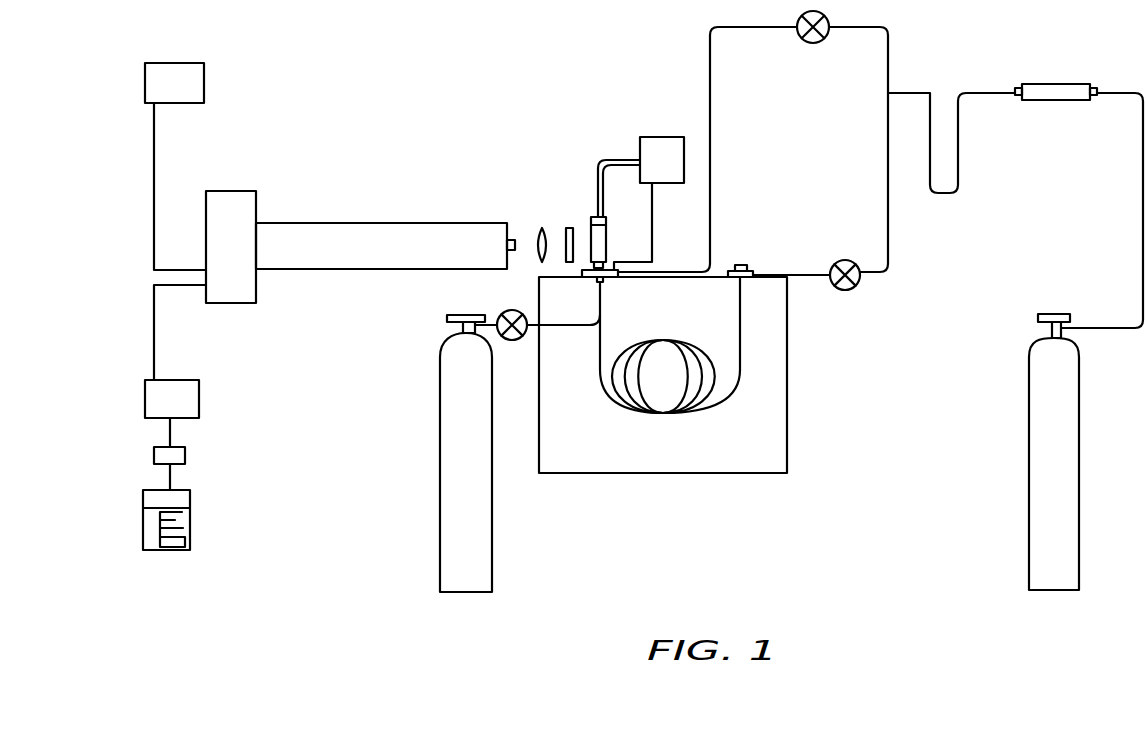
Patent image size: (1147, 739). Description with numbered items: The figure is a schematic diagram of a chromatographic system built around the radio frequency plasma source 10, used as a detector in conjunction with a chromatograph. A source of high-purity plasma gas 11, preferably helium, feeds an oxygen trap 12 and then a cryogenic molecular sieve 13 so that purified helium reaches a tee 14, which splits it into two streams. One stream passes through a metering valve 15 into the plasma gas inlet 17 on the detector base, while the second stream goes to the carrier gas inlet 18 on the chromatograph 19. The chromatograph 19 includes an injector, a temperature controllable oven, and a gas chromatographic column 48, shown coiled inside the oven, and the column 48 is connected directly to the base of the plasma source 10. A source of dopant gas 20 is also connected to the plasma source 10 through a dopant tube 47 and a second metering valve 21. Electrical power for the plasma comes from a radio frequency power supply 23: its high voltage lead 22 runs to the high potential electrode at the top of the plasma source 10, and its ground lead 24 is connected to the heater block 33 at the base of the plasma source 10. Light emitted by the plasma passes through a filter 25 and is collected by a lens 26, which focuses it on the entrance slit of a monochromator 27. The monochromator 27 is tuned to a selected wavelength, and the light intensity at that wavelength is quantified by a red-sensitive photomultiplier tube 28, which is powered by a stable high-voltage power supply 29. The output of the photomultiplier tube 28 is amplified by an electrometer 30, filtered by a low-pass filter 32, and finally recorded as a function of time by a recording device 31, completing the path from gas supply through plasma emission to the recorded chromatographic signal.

The radio frequency plasma source 10 is at (603, 242).
The source of high-purity plasma gas 11 is at (1066, 448).
The oxygen trap 12 is at (1057, 99).
The cryogenic molecular sieve 13 is at (960, 170).
The tee 14 is at (887, 97).
The metering valve 15 is at (807, 43).
The plasma gas inlet 17 is at (640, 272).
The carrier gas inlet 18 is at (752, 270).
The chromatograph 19 is at (778, 383).
The source of dopant gas 20 is at (473, 563).
The metering valve 21 is at (512, 340).
The high voltage lead 22 is at (594, 178).
The radio frequency power supply 23 is at (663, 148).
The ground lead 24 is at (652, 208).
The filter 25 is at (569, 228).
The lens 26 is at (538, 232).
The monochromator 27 is at (373, 243).
The red-sensitive photomultiplier tube 28 is at (240, 207).
The stable high-voltage power supply 29 is at (193, 88).
The electrometer 30 is at (188, 390).
The recording device 31 is at (185, 522).
The low-pass filter 32 is at (183, 455).
The heater block 33 is at (590, 283).
The dopant tube 47 is at (558, 327).
The gas chromatographic column 48 is at (680, 415).